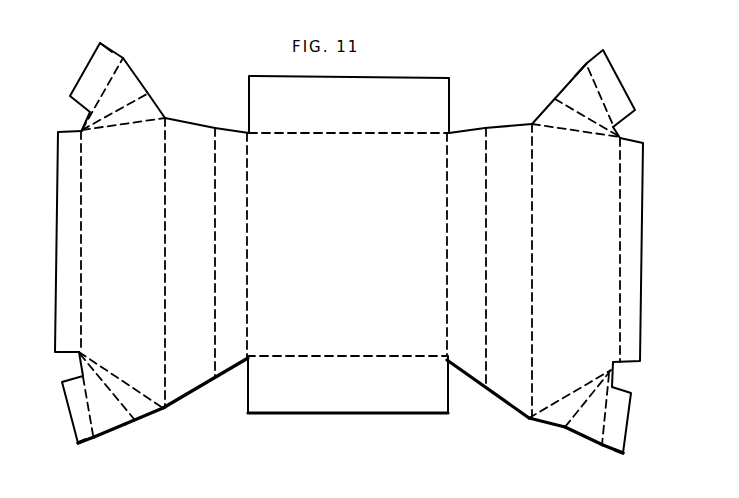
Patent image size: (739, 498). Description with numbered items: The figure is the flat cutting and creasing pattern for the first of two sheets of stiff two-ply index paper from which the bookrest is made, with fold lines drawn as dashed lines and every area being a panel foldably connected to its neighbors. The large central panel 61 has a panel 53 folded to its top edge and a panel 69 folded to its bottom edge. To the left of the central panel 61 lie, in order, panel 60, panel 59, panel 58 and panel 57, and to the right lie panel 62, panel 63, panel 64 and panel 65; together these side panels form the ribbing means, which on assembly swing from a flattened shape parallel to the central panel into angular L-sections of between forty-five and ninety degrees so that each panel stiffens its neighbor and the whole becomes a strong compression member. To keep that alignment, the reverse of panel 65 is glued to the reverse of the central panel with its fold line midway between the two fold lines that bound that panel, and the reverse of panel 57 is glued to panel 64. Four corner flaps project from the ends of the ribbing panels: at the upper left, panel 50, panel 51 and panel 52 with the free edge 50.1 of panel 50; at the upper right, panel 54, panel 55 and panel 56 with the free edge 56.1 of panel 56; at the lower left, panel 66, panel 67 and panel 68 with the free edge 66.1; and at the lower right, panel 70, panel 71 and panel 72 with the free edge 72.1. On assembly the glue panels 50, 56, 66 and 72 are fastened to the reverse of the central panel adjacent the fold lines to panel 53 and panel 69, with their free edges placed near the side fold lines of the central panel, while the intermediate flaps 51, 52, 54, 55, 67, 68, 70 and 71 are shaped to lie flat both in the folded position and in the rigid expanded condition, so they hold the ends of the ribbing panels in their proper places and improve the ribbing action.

The panel 50 is at (110, 85).
The edge 50.1 is at (108, 47).
The panel 51 is at (131, 91).
The panel 52 is at (123, 111).
The panel 53 is at (354, 113).
The panel 54 is at (576, 125).
The panel 55 is at (588, 105).
The panel 56 is at (611, 83).
The edge 56.1 is at (587, 63).
The panel 57 is at (58, 195).
The panel 58 is at (128, 193).
The panel 59 is at (201, 193).
The panel 60 is at (241, 193).
The panel 61 is at (348, 197).
The panel 62 is at (468, 198).
The panel 63 is at (521, 198).
The panel 64 is at (590, 198).
The panel 65 is at (634, 209).
The panel 66 is at (84, 411).
The edge 66.1 is at (84, 444).
The panel 67 is at (112, 415).
The panel 68 is at (121, 388).
The panel 69 is at (351, 406).
The panel 70 is at (570, 398).
The panel 71 is at (601, 421).
The panel 72 is at (626, 413).
The edge 72.1 is at (616, 453).